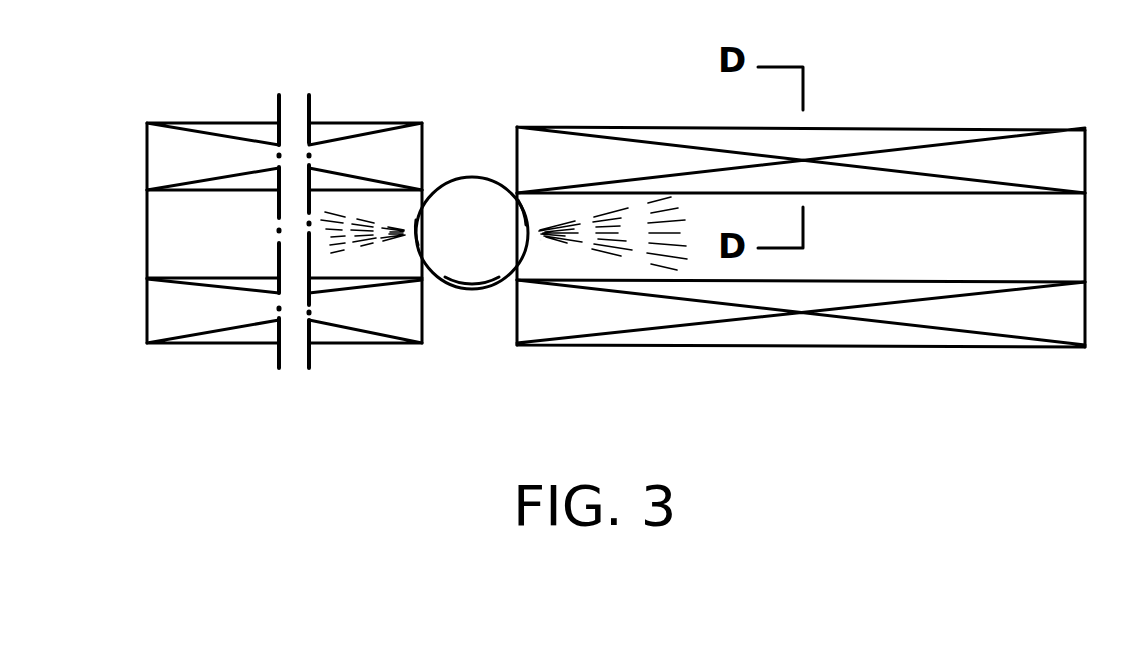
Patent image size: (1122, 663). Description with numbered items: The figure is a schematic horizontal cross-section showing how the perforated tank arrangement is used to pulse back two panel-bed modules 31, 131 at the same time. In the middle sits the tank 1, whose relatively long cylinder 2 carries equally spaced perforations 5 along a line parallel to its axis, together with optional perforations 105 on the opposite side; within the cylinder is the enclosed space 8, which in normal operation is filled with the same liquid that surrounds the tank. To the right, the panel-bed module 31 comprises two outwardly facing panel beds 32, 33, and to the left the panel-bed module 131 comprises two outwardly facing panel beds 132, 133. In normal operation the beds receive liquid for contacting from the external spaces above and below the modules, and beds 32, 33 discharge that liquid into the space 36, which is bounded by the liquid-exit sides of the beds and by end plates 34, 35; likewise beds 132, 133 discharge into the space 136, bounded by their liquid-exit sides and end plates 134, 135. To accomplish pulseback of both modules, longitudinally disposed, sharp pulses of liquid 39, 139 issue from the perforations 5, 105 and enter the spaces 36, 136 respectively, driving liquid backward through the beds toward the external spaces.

The tank 1 is at (471, 202).
The cylinder 2 is at (453, 290).
The perforations 5 is at (525, 235).
The space 8 is at (492, 242).
The panel-bed module 31 is at (787, 224).
The panel bed 32 is at (877, 200).
The panel bed 33 is at (850, 280).
The end plate 34 is at (1085, 240).
The end plate 35 is at (515, 323).
The space 36 is at (992, 265).
The pulse of liquid 39 is at (597, 280).
The perforations 105 is at (420, 235).
The panel-bed module 131 is at (281, 212).
The panel bed 132 is at (219, 197).
The panel bed 133 is at (222, 277).
The end plate 134 is at (147, 245).
The end plate 135 is at (425, 323).
The space 136 is at (258, 251).
The pulse of liquid 139 is at (353, 252).